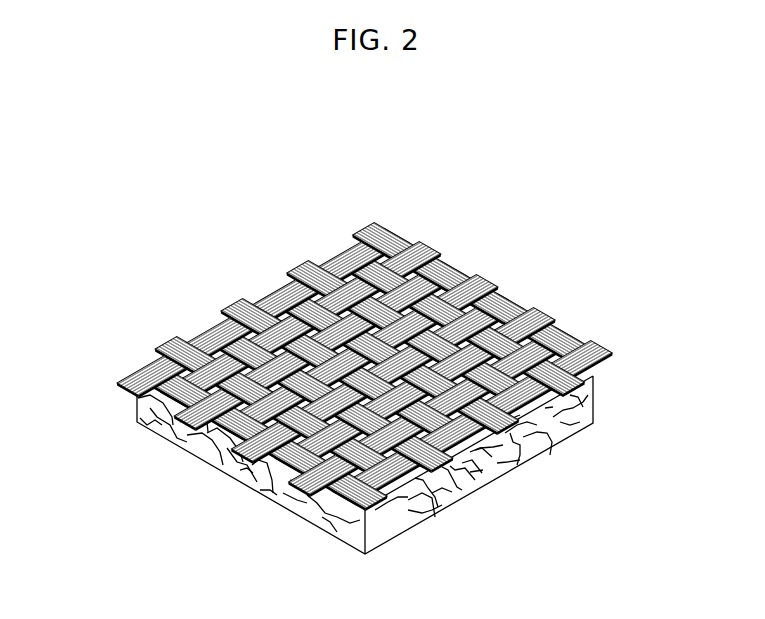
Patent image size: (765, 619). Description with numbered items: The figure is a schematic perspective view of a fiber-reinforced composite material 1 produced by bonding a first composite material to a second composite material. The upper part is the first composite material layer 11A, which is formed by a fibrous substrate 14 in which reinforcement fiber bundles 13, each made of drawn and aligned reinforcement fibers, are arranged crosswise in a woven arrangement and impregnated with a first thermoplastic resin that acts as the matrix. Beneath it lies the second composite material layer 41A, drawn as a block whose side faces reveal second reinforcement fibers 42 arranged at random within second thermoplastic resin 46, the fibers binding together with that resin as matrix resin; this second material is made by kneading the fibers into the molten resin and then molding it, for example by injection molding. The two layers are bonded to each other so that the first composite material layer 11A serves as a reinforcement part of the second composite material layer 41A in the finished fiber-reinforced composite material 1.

The fiber-reinforced composite material 1 is at (481, 178).
The first composite material layer 11A is at (365, 347).
The reinforcement fiber bundles 13 is at (175, 336).
The fibrous substrate 14 is at (365, 335).
The second composite material layer 41A is at (136, 424).
The second reinforcement fibers 42 is at (330, 265).
The second thermoplastic resin 46 is at (226, 398).